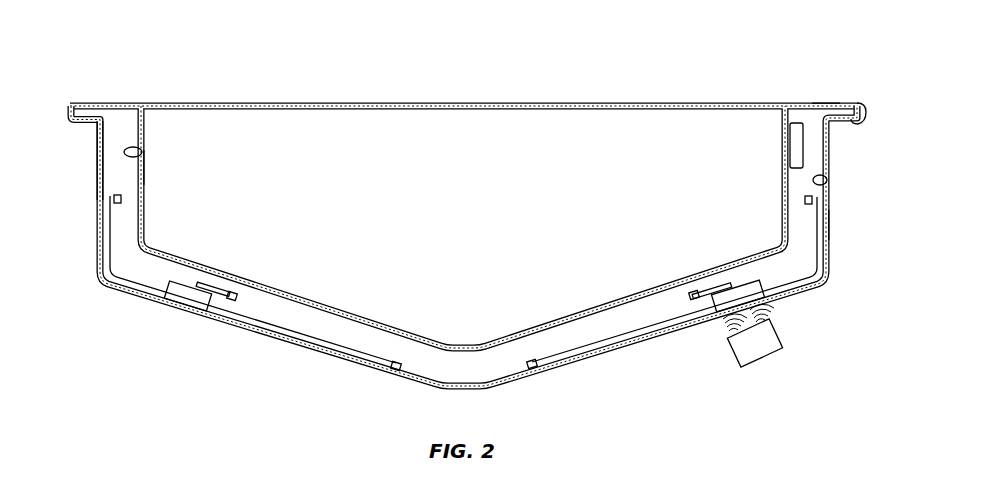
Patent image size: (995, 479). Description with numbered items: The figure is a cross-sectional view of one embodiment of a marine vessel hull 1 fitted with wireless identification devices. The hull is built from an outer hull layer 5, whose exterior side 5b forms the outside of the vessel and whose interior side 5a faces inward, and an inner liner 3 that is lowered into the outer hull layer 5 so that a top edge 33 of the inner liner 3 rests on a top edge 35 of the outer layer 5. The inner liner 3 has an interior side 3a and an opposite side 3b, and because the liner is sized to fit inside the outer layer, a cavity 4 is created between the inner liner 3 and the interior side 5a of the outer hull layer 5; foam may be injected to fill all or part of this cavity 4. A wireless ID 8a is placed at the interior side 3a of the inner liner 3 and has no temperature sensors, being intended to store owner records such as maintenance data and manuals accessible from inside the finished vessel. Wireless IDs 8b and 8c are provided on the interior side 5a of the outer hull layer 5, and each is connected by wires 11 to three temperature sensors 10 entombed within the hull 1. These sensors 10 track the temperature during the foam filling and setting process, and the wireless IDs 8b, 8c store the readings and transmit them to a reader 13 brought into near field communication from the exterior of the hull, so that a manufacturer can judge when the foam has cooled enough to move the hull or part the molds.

The marine vessel hull 1 is at (594, 98).
The inner liner 3 is at (141, 122).
The interior side of the inner liner 3a is at (142, 150).
The tray wall outer side 3b is at (144, 170).
The cavity 4 is at (117, 135).
The outer hull layer 5 is at (833, 140).
The interior side of the outer hull layer 5a is at (827, 185).
The exterior side of the outer hull layer 5b is at (829, 222).
The wireless ID 8a is at (790, 150).
The wireless ID 8b is at (730, 302).
The wireless ID 8c is at (188, 297).
The temperature sensor 10 is at (122, 198).
The wire 11 is at (123, 281).
The reader 13 is at (763, 349).
The top edge of the inner liner 33 is at (827, 105).
The top edge of the outer layer 35 is at (863, 108).